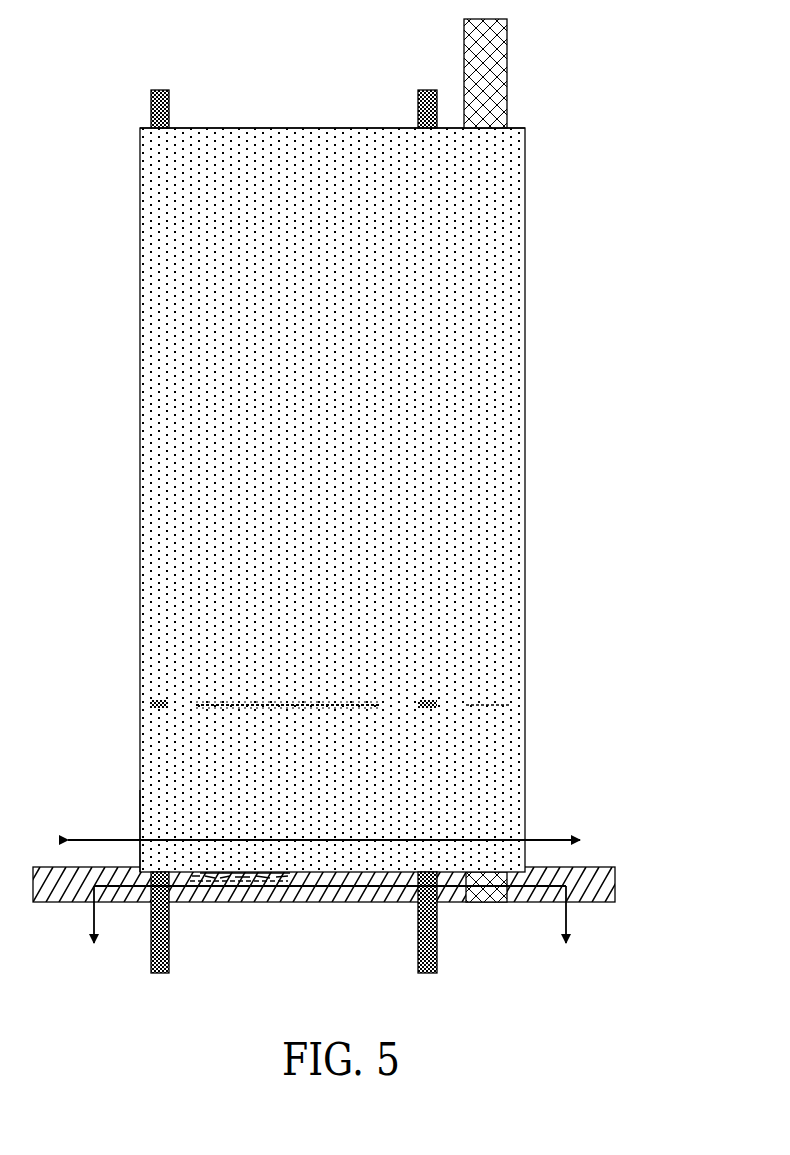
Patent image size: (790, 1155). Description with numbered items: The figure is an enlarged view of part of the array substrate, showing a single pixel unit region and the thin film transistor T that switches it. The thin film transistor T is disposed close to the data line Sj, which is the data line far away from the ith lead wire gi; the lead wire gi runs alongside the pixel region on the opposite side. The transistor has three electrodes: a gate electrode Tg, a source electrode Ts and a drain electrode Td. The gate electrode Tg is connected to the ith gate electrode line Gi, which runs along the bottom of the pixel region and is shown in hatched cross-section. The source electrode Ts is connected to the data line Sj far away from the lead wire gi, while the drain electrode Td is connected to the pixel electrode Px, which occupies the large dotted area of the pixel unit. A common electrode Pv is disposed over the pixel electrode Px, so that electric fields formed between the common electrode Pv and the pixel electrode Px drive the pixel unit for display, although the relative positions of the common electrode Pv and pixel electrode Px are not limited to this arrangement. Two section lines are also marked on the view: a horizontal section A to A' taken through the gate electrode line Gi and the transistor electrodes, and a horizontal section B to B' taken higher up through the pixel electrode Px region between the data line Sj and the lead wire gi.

The data line Sj is at (155, 108).
The lead wire gi is at (480, 68).
The gate electrode line Gi is at (600, 883).
The pixel electrode Px is at (248, 128).
The common electrode Pv is at (328, 128).
The thin film transistor T is at (140, 758).
The source electrode Ts is at (140, 813).
The gate electrode Tg is at (247, 873).
The drain electrode Td is at (298, 873).
The section line A is at (327, 932).
The section line A' is at (583, 935).
The section line B is at (310, 838).
The section line B' is at (585, 818).